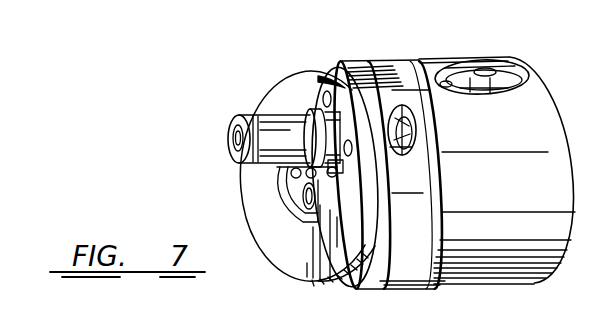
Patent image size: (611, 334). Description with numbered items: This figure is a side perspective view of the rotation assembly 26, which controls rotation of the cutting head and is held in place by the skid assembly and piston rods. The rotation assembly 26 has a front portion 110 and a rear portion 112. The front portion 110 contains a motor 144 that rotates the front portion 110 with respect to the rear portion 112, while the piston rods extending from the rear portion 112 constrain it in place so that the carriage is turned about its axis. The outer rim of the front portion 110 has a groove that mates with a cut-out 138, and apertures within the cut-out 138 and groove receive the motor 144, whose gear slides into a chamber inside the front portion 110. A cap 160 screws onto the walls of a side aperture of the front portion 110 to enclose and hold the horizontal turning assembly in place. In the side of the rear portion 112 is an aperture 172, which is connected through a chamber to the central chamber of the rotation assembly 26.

The rotation assembly 26 is at (467, 52).
The front portion 110 is at (357, 293).
The rear portion 112 is at (477, 268).
The cut-out 138 is at (343, 92).
The motor 144 is at (254, 116).
The cap 160 is at (412, 117).
The aperture 172 is at (520, 62).